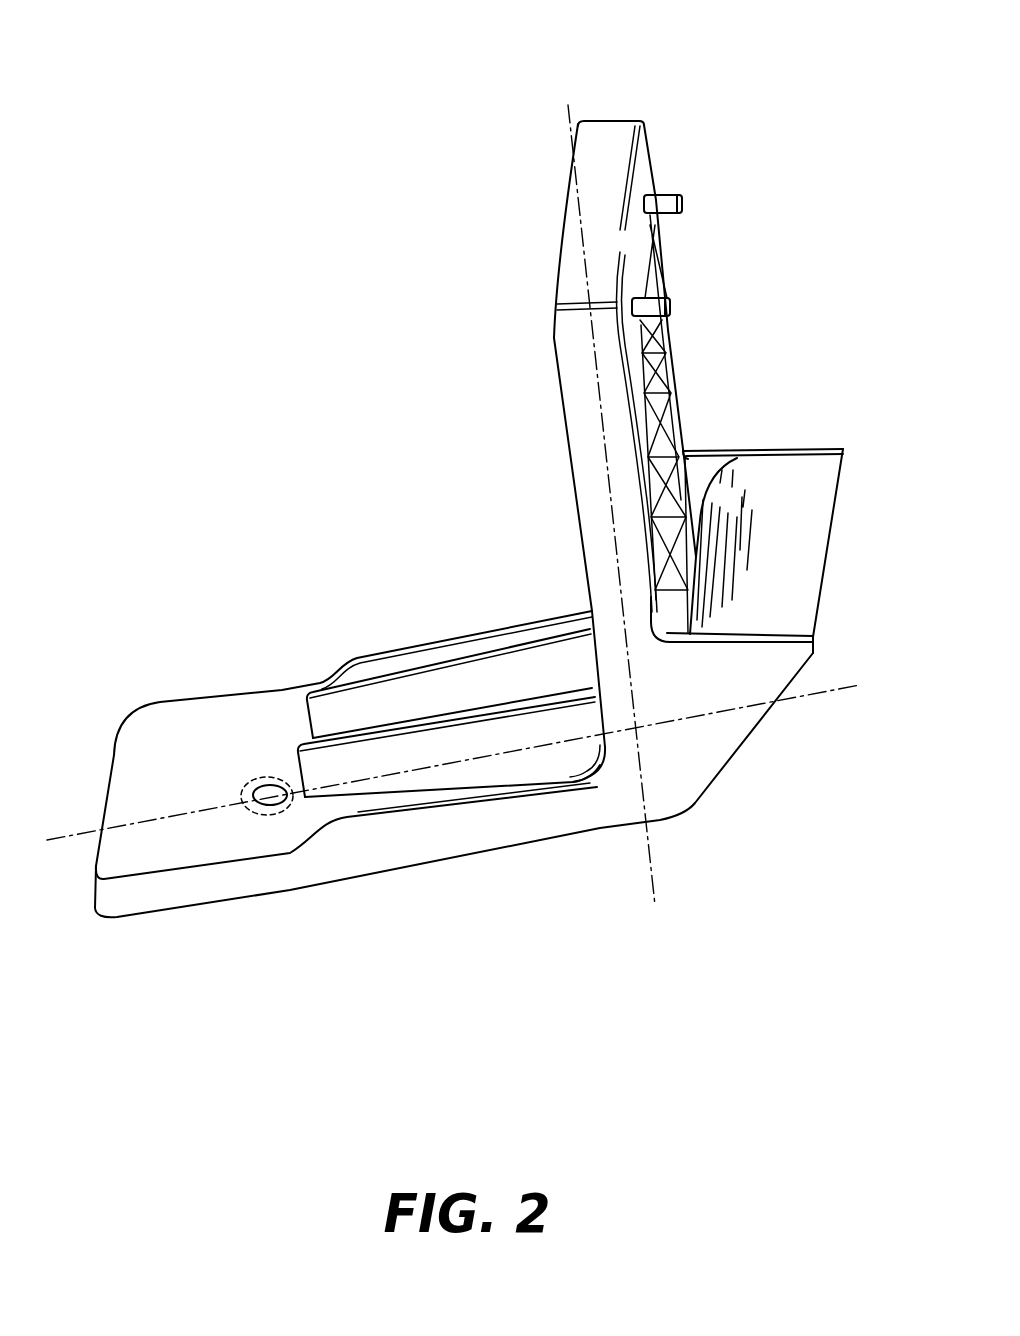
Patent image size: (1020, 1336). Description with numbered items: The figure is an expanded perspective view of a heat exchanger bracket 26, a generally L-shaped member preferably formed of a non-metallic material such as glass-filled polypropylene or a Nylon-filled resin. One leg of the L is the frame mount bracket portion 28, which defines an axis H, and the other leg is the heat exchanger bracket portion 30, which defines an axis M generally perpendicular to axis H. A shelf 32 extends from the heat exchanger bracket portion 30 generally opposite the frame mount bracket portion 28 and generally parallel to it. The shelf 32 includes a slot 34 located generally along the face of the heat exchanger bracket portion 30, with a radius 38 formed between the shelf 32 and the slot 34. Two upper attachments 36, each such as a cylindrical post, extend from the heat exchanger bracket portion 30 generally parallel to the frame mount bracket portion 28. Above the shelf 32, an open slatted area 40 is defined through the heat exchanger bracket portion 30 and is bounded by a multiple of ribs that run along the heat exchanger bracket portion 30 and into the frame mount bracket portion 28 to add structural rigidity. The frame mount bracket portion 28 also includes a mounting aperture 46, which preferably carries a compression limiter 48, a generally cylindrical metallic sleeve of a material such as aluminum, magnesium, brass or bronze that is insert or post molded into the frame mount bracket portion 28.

The heat exchanger bracket 26 is at (478, 504).
The frame mount bracket portion 28 is at (403, 843).
The heat exchanger bracket portion 30 is at (605, 119).
The shelf 32 is at (832, 547).
The slot 34 is at (723, 453).
The upper attachment 36 is at (683, 203).
The radius 38 is at (790, 473).
The open slatted area 40 is at (707, 370).
The mounting aperture 46 is at (275, 798).
The compression limiter 48 is at (245, 810).
The axis H is at (657, 886).
The axis M is at (73, 840).